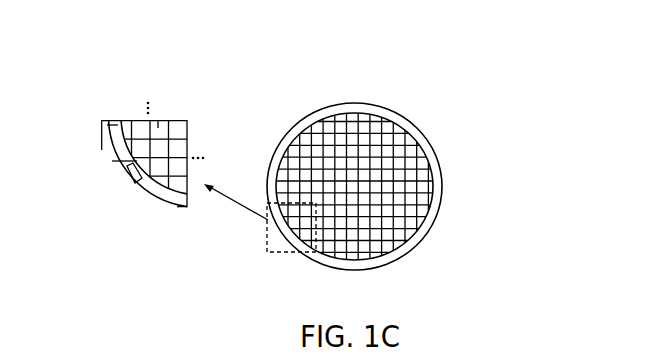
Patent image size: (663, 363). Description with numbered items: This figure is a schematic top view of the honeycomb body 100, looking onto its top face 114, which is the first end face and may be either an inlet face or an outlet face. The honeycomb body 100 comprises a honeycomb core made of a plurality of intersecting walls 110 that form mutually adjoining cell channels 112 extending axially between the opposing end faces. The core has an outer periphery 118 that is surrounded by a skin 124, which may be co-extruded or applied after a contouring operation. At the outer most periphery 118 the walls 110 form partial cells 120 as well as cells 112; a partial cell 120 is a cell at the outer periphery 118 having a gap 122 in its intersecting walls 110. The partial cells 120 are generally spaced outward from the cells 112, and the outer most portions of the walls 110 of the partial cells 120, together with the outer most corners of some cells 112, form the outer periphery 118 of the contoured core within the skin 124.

The honeycomb body 100 is at (319, 163).
The intersecting walls 110 is at (168, 121).
The cell channels 112 is at (158, 121).
The top face 114 is at (410, 185).
The outer periphery 118 is at (114, 112).
The partial cell 120 is at (112, 161).
The gap 122 is at (130, 183).
The skin 124 is at (432, 147).